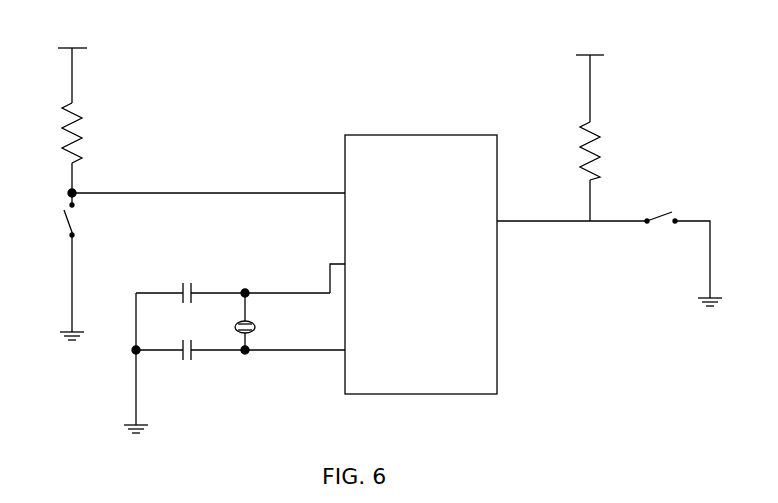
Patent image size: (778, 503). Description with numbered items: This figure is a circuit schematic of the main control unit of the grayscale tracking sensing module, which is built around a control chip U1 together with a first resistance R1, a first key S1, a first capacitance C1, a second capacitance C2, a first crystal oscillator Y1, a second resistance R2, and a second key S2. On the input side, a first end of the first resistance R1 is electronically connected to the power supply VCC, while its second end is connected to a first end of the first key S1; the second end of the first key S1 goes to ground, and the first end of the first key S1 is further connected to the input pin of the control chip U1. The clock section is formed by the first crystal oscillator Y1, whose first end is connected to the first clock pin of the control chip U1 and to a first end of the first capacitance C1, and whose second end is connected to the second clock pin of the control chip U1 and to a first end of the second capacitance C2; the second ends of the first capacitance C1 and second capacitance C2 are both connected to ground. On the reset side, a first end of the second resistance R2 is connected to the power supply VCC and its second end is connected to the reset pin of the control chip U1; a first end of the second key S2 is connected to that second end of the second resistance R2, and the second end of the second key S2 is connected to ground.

The power supply VCC is at (330, 73).
The first resistance R1 is at (56, 148).
The second resistance R2 is at (605, 171).
The first key S1 is at (58, 266).
The second key S2 is at (683, 241).
The first capacitance C1 is at (233, 278).
The second capacitance C2 is at (240, 369).
The first crystal oscillator Y1 is at (260, 321).
The control chip U1 is at (421, 252).